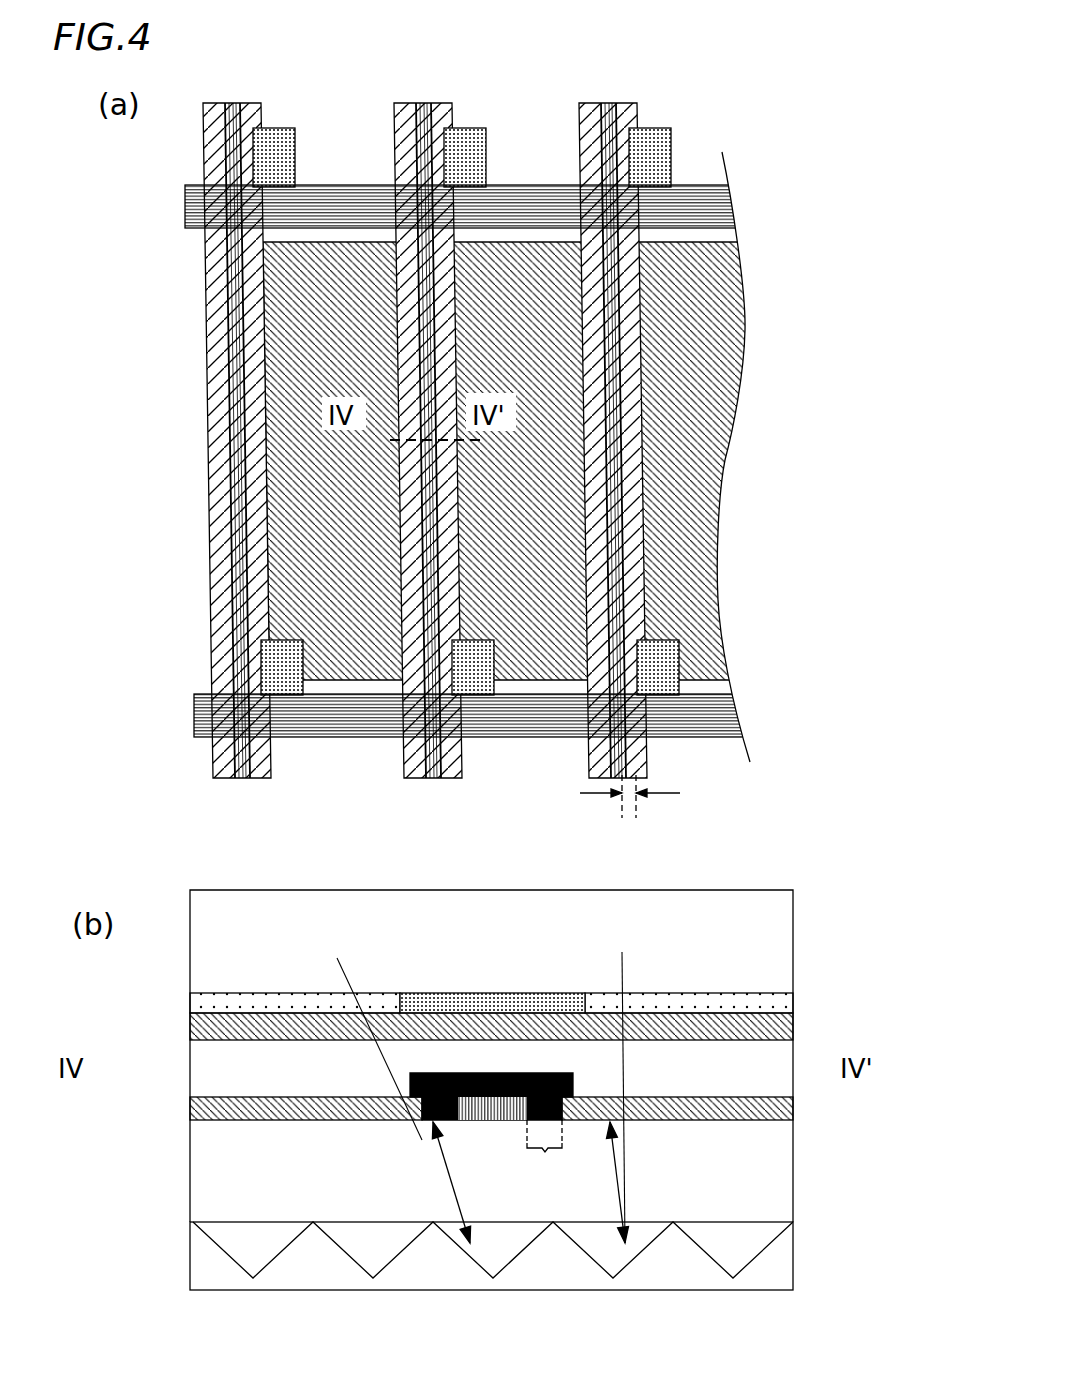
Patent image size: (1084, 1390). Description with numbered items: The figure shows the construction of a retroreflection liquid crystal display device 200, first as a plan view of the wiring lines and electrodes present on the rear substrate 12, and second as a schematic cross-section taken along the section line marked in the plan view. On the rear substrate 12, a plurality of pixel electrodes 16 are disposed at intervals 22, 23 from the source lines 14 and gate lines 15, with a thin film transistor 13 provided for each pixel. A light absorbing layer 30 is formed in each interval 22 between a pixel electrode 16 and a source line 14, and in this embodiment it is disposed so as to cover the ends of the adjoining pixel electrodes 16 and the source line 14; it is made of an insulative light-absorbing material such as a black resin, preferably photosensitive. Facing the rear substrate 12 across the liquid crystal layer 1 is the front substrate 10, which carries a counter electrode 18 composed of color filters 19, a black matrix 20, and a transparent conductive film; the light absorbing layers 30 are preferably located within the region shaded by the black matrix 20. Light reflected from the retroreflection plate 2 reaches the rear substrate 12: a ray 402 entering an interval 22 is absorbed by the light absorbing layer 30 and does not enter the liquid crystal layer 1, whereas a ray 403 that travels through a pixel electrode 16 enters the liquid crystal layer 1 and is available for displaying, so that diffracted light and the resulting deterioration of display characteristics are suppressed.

The liquid crystal layer 1 is at (213, 1052).
The retroreflection plate 2 is at (780, 1260).
The front substrate 10 is at (768, 952).
The rear substrate 12 is at (745, 135).
The thin film transistor 13 is at (275, 128).
The source line 14 is at (426, 105).
The gate line 15 is at (722, 208).
The pixel electrode 16 is at (717, 342).
The counter electrode 18 is at (793, 1023).
The color filter 19 is at (700, 993).
The black matrix 20 is at (493, 993).
The interval 22 is at (610, 973).
The interval 23 is at (717, 685).
The light absorbing layer 30 is at (600, 680).
The display device 200 is at (741, 81).
The ray 402 is at (425, 1148).
The ray 403 is at (625, 1150).